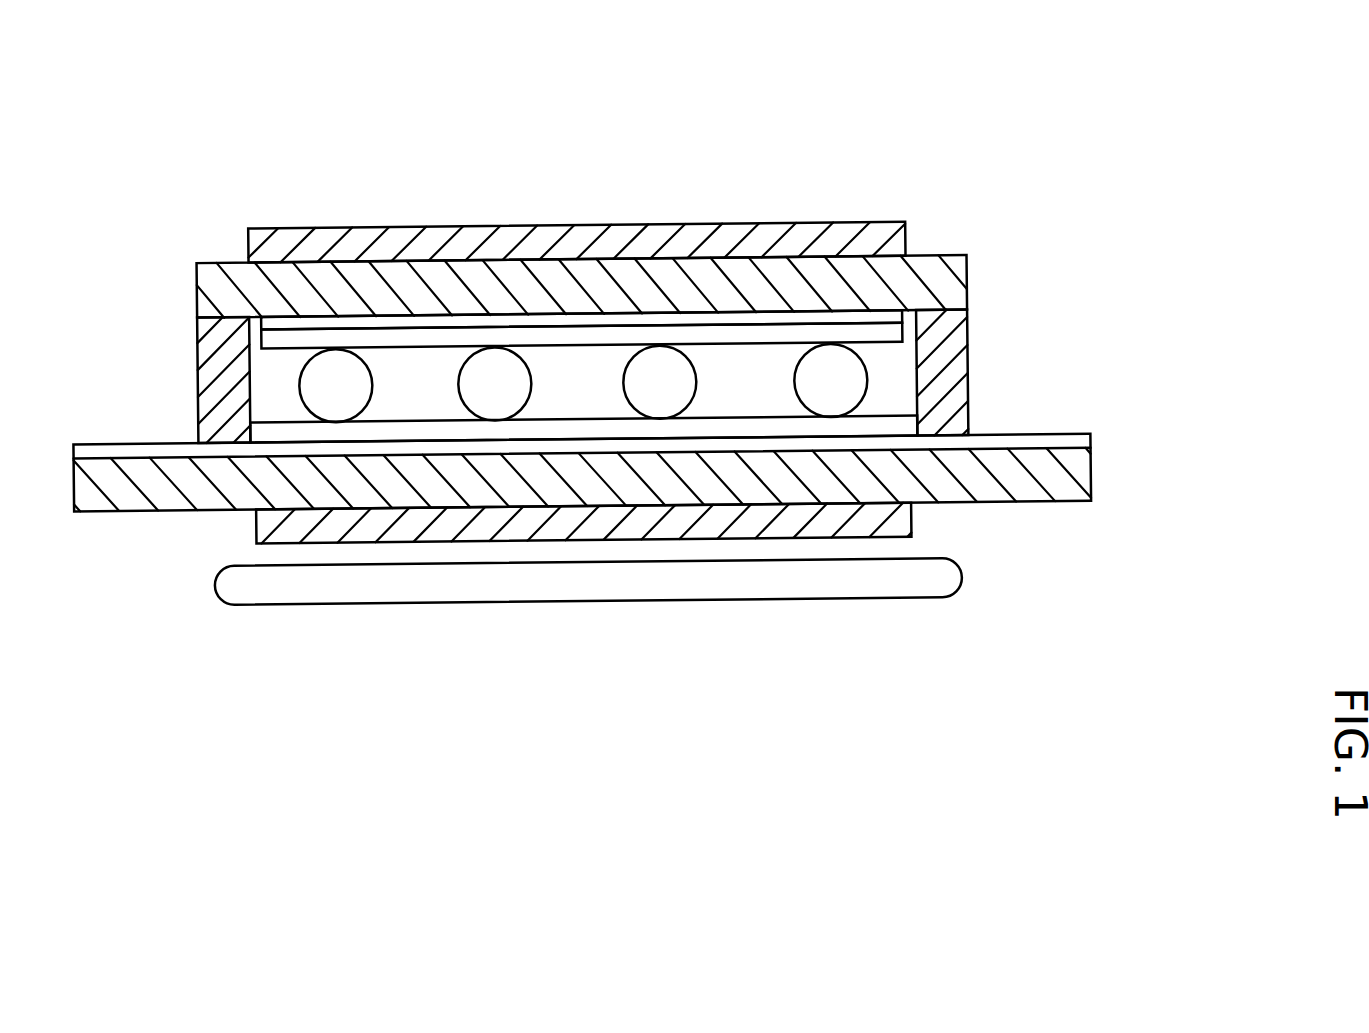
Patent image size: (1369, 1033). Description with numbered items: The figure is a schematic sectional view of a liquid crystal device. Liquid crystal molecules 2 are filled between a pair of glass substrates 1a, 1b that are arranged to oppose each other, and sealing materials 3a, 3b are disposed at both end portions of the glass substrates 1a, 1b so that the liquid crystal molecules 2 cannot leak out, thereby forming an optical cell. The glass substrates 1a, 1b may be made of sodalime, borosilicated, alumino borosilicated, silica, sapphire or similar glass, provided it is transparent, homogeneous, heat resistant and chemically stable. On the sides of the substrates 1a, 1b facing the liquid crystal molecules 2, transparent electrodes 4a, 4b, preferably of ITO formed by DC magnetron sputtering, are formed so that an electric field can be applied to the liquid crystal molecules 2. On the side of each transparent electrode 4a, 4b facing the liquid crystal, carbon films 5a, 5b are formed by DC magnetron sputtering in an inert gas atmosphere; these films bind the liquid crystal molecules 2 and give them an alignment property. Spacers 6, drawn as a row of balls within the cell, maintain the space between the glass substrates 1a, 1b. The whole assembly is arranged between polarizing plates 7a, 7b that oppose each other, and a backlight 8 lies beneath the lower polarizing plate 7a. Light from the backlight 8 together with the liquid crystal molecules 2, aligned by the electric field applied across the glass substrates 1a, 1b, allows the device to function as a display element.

The glass substrate 1a is at (1033, 502).
The glass substrate 1b is at (972, 272).
The liquid crystal molecules 2 is at (888, 383).
The sealing material 3a is at (198, 408).
The sealing material 3b is at (970, 392).
The transparent electrode 4a is at (672, 438).
The transparent electrode 4b is at (640, 326).
The carbon film 5a is at (542, 421).
The carbon film 5b is at (757, 344).
The spacer 6 is at (363, 357).
The polarizing plate 7a is at (368, 543).
The polarizing plate 7b is at (515, 225).
The backlight 8 is at (263, 607).